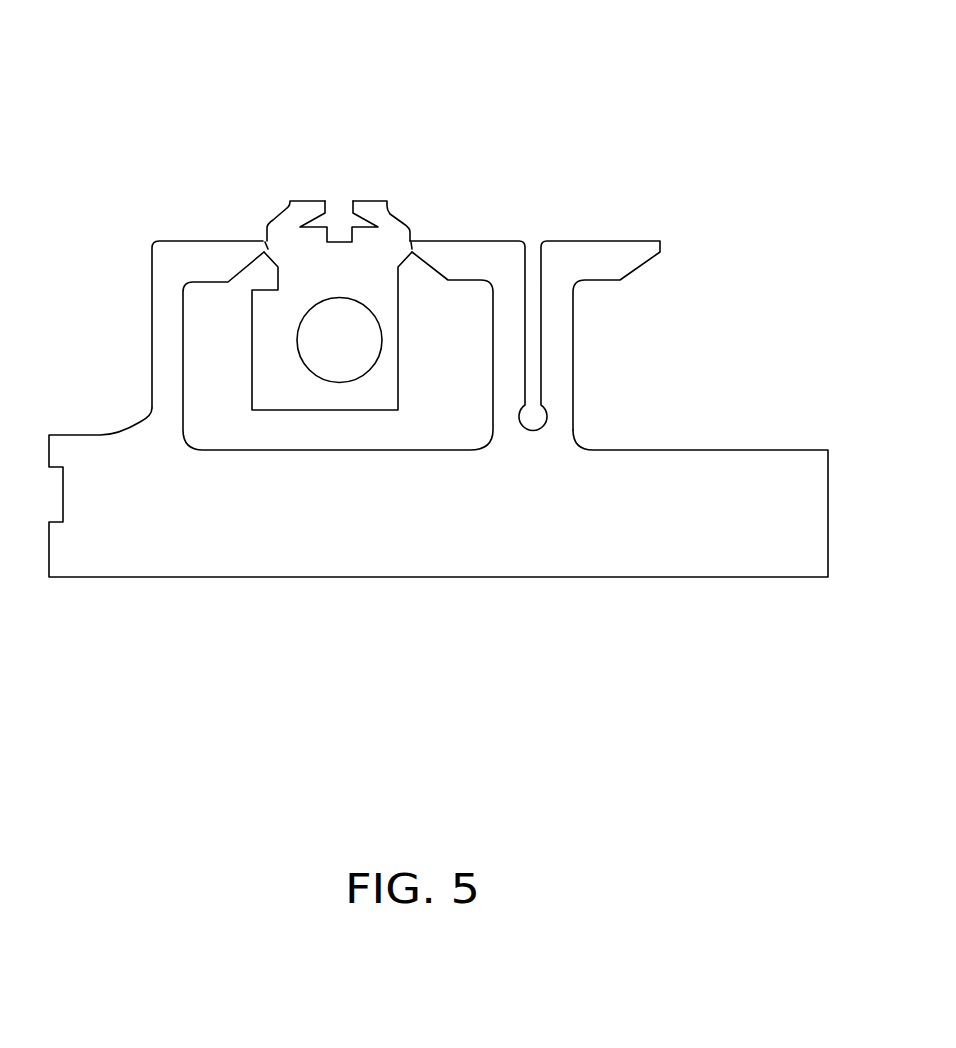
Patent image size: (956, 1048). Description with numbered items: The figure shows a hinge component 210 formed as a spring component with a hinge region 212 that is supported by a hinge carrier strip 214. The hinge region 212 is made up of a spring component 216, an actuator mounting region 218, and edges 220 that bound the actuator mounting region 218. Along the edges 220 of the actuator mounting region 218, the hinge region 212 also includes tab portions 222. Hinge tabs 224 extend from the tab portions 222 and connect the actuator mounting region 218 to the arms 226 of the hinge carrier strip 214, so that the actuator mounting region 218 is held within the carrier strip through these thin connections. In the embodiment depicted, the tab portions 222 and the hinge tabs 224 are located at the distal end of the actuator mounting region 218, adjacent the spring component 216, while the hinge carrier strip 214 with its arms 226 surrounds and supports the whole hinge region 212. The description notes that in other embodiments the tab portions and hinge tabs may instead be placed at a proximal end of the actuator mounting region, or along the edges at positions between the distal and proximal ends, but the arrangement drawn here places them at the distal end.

The hinge component 210 is at (498, 135).
The hinge region 212 is at (338, 200).
The hinge carrier strip 214 is at (663, 346).
The spring component 216 is at (278, 217).
The actuator mounting region 218 is at (307, 390).
The edges 220 is at (277, 274).
The tab portions 222 is at (390, 255).
The hinge tabs 224 is at (264, 250).
The arms 226 is at (173, 265).